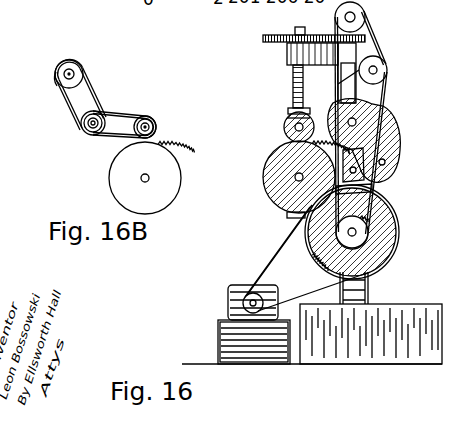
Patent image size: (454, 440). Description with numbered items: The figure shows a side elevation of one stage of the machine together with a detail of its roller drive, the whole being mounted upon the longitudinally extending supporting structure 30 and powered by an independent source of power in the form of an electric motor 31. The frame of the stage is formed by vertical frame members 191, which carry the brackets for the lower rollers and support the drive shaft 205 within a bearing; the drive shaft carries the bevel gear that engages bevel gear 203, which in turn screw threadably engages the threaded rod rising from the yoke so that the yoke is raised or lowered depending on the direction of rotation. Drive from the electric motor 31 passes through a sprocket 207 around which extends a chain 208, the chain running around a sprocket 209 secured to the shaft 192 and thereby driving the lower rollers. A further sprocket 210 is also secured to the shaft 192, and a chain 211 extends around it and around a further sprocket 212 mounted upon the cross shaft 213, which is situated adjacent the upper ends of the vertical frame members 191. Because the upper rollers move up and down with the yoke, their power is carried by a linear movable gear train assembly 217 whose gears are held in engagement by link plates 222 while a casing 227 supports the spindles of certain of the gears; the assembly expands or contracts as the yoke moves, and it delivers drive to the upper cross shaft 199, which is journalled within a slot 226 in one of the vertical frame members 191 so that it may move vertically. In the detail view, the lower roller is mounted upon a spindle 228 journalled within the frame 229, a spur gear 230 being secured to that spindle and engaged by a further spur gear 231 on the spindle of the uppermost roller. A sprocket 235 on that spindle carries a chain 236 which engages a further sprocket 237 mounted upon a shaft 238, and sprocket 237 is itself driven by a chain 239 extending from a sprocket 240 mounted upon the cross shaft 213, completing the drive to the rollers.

In FIG. 16, the supporting structure 30 is at (371, 334).
In FIG. 16, the electric motor 31 is at (235, 324).
In FIG. 16, the vertical frame members 191 is at (368, 288).
In FIG. 16, the shaft 192 is at (365, 243).
In FIG. 16, the upper cross shaft 199 is at (360, 114).
In FIG. 16, the bevel gear 203 is at (366, 35).
In FIG. 16, the drive shaft 205 is at (357, 15).
In FIG. 16, the sprocket 207 is at (250, 293).
In FIG. 16, the chain 208 is at (286, 240).
In FIG. 16, the sprocket 209 is at (390, 210).
In FIG. 16, the sprocket 210 is at (360, 232).
In FIG. 16, the chain 211 is at (384, 187).
In FIG. 16, the sprocket 212 is at (387, 67).
In FIG. 16B, the cross shaft 213 is at (74, 72).
In FIG. 16, the linear movable gear train assembly 217 is at (390, 158).
In FIG. 16, the link plates 222 is at (372, 167).
In FIG. 16, the slot 226 is at (386, 79).
In FIG. 16, the casing 227 is at (395, 128).
In FIG. 16B, the spindle 228 is at (140, 178).
In FIG. 16, the spindle 228 is at (295, 178).
In FIG. 16, the frame 229 is at (294, 142).
In FIG. 16B, the spur gear 230 is at (170, 172).
In FIG. 16, the spur gear 230 is at (283, 165).
In FIG. 16B, the spur gear 231 is at (157, 133).
In FIG. 16, the spur gear 231 is at (288, 118).
In FIG. 16B, the sprocket 235 is at (156, 123).
In FIG. 16B, the chain 236 is at (122, 113).
In FIG. 16B, the sprocket 237 is at (82, 130).
In FIG. 16B, the shaft 238 is at (93, 128).
In FIG. 16B, the chain 239 is at (93, 101).
In FIG. 16, the chain 239 is at (297, 70).
In FIG. 16B, the sprocket 240 is at (57, 80).
In FIG. 16, the sprocket 240 is at (307, 32).